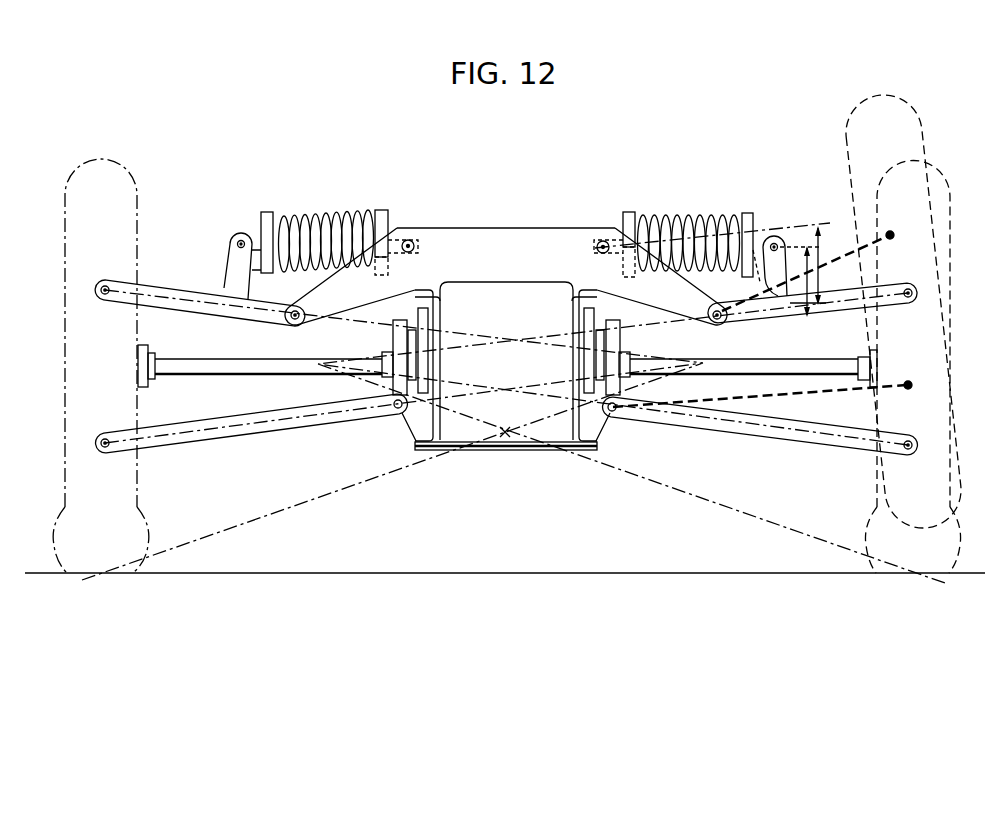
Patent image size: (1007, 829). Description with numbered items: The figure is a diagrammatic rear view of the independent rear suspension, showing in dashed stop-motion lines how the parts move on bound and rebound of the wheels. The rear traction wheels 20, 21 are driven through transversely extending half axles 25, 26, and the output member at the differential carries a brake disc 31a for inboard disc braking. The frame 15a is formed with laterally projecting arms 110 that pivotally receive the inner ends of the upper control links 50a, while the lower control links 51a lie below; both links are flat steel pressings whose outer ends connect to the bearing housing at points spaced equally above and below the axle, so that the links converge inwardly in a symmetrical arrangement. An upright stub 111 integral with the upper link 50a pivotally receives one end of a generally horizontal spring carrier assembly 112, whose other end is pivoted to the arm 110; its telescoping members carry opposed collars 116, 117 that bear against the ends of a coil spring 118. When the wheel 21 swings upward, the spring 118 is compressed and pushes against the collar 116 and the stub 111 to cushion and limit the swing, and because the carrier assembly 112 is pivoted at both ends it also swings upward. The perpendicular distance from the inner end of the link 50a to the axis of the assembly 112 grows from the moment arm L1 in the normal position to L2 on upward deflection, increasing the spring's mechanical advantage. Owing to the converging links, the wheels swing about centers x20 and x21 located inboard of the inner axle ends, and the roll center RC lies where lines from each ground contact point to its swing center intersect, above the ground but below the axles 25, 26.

The rear traction wheel 20 is at (58, 275).
The rear traction wheel 21 is at (930, 146).
The frame 15a is at (546, 228).
The laterally projecting arm 110 is at (320, 300).
The upright stub 111 is at (232, 262).
The spring carrier assembly 112 is at (722, 205).
The collar 116 is at (749, 214).
The collar 117 is at (629, 212).
The coil spring 118 is at (669, 216).
The brake disc 31a is at (590, 316).
The half axle 25 is at (257, 365).
The half axle 26 is at (772, 368).
The upper control link 50a is at (188, 293).
The lower control link 51a is at (255, 428).
The swing center x20 is at (690, 367).
The swing center x21 is at (312, 363).
The roll center RC is at (506, 430).
The moment arm L1 is at (801, 281).
The moment arm L2 is at (814, 265).